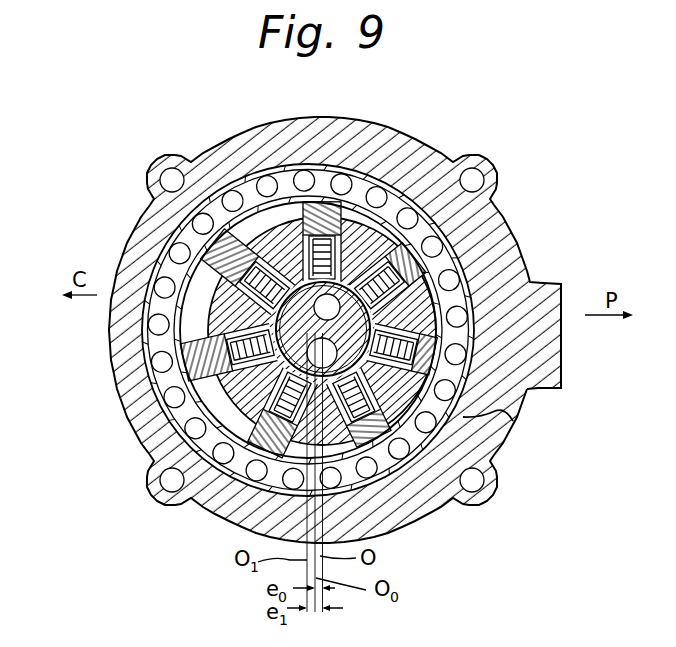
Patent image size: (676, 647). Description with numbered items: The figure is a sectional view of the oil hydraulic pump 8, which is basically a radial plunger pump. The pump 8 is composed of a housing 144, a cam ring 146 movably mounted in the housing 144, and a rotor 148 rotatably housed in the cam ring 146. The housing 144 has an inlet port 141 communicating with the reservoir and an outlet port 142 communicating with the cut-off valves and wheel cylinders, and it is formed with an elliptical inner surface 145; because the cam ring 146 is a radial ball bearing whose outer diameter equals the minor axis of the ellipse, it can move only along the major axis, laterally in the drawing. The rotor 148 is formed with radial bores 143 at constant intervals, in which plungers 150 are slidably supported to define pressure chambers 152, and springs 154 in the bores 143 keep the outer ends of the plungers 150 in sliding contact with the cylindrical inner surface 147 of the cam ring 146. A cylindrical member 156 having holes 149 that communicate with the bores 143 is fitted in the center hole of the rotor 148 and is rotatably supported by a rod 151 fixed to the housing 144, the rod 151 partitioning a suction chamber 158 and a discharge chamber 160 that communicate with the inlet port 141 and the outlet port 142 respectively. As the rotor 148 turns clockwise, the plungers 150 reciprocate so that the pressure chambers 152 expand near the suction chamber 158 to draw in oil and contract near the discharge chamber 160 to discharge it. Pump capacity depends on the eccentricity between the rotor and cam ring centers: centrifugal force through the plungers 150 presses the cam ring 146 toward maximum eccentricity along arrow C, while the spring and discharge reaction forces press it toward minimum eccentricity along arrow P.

The oil hydraulic pump 8 is at (455, 140).
The inlet port 141 is at (490, 457).
The outlet port 142 is at (467, 160).
The bores 143 is at (399, 526).
The housing 144 is at (515, 273).
The elliptical inner surface 145 is at (466, 255).
The cam ring 146 is at (513, 421).
The cylindrical inner surface 147 is at (200, 312).
The rotor 148 is at (430, 508).
The holes 149 is at (141, 380).
The plungers 150 is at (333, 184).
The rod 151 is at (485, 265).
The pressure chambers 152 is at (378, 190).
The springs 154 is at (252, 172).
The cylindrical member 156 is at (152, 447).
The suction chamber 158 is at (218, 507).
The discharge chamber 160 is at (147, 320).